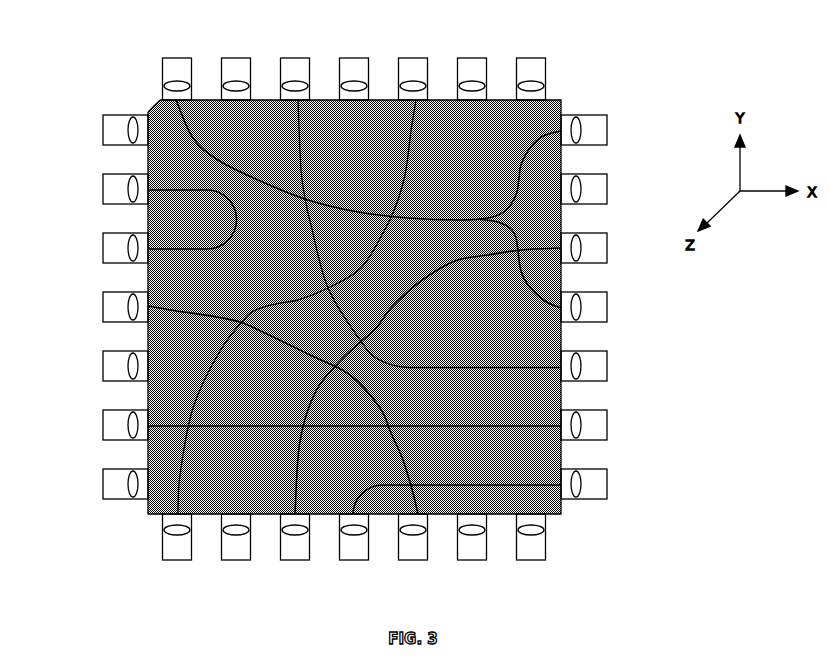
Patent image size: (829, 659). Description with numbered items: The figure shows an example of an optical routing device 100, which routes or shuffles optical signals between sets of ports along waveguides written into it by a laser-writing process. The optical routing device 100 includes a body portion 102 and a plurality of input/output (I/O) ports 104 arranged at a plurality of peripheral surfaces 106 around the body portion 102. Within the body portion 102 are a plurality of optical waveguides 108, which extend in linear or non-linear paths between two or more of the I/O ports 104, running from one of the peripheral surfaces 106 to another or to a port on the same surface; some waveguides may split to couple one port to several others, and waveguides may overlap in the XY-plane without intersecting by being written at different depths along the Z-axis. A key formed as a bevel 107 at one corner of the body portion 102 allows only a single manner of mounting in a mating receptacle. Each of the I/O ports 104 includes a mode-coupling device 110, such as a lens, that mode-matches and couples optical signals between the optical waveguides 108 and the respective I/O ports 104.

The optical routing device 100 is at (100, 26).
The body portion 102 is at (228, 139).
The input/output (I/O) ports 104 is at (558, 58).
The peripheral surfaces 106 is at (318, 92).
The bevel 107 is at (129, 85).
The optical waveguides 108 is at (317, 190).
The mode-coupling device 110 is at (221, 72).